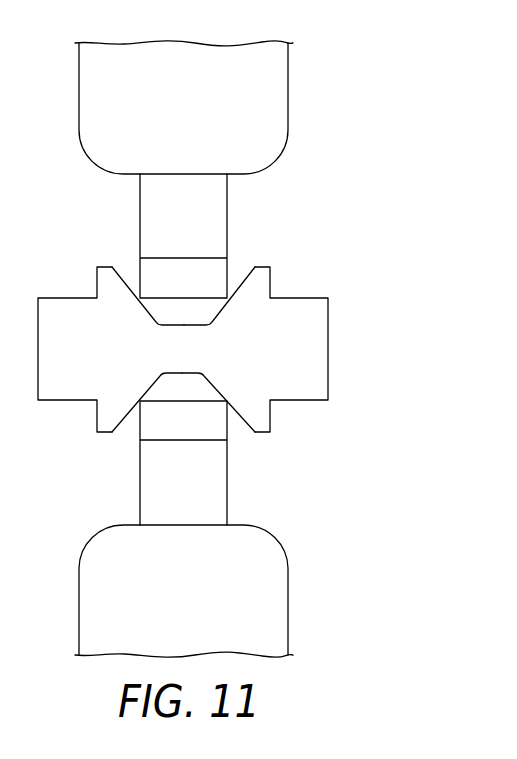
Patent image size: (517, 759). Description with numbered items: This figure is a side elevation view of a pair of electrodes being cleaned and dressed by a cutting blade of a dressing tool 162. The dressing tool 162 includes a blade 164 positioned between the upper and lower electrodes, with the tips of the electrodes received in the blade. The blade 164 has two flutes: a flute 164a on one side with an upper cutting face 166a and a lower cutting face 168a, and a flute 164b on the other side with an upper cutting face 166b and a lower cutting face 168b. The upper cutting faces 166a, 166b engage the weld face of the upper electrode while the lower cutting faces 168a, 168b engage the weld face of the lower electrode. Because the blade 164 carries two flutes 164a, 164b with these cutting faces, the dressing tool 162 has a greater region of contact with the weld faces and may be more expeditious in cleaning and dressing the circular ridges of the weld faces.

The dressing tool 162 is at (207, 353).
The blade 164 is at (200, 353).
The flute 164a is at (267, 360).
The flute 164b is at (68, 363).
The upper cutting face 166a is at (193, 325).
The upper cutting face 166b is at (173, 325).
The lower cutting face 168a is at (202, 373).
The lower cutting face 168b is at (168, 373).